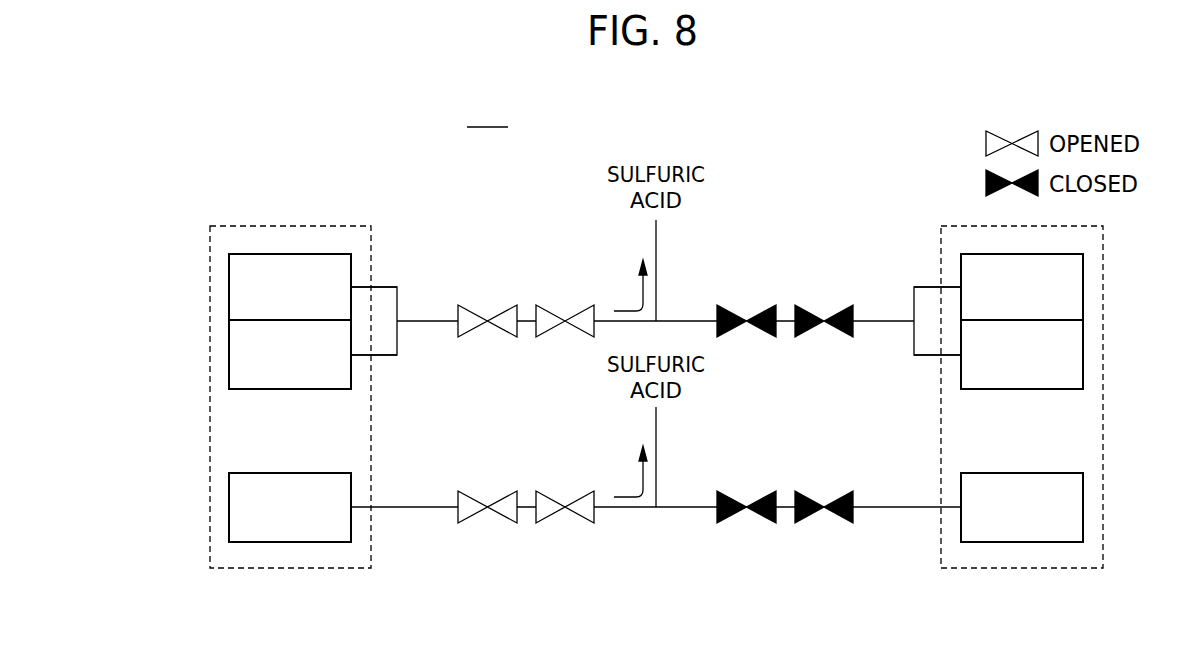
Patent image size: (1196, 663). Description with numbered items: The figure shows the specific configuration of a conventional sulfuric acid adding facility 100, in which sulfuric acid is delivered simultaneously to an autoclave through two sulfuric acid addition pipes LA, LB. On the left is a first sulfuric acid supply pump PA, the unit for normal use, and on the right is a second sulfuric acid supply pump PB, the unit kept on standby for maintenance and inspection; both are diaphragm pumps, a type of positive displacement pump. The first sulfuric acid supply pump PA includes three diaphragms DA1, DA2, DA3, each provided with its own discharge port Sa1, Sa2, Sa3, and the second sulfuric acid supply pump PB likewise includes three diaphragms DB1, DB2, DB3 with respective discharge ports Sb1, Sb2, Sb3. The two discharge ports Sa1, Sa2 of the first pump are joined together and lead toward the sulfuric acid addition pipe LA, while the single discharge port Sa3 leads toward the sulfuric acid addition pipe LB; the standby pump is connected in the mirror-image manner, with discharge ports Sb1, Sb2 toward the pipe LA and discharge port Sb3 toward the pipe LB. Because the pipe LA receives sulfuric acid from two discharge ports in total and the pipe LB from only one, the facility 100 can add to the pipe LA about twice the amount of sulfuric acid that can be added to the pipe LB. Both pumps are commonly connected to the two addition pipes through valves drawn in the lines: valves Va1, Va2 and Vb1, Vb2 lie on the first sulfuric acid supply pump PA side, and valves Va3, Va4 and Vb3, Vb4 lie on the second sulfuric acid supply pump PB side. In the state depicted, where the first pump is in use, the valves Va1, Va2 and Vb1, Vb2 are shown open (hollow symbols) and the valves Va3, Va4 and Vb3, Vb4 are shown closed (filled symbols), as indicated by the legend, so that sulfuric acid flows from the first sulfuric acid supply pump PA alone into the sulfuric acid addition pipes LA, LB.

The sulfuric acid adding facility 100 is at (487, 115).
The diaphragm DA1 is at (229, 292).
The diaphragm DA2 is at (229, 358).
The diaphragm DA3 is at (229, 506).
The diaphragm DB1 is at (1083, 291).
The diaphragm DB2 is at (1083, 359).
The diaphragm DB3 is at (1083, 505).
The discharge port Sa1 is at (372, 274).
The discharge port Sa2 is at (372, 367).
The discharge port Sa3 is at (372, 520).
The discharge port Sb1 is at (942, 274).
The discharge port Sb2 is at (942, 367).
The discharge port Sb3 is at (942, 520).
The valve Va1 is at (470, 310).
The valve Va2 is at (548, 310).
The valve Va3 is at (728, 310).
The valve Va4 is at (806, 310).
The valve Vb1 is at (470, 496).
The valve Vb2 is at (548, 496).
The valve Vb3 is at (728, 496).
The valve Vb4 is at (806, 496).
The sulfuric acid addition pipe LA is at (656, 262).
The sulfuric acid addition pipe LB is at (656, 447).
The first sulfuric acid supply pump PA is at (290, 568).
The second sulfuric acid supply pump PB is at (1033, 568).